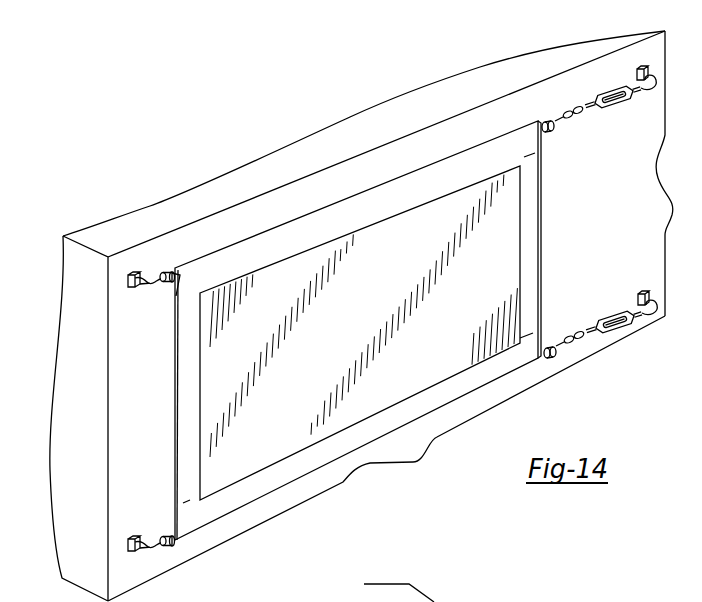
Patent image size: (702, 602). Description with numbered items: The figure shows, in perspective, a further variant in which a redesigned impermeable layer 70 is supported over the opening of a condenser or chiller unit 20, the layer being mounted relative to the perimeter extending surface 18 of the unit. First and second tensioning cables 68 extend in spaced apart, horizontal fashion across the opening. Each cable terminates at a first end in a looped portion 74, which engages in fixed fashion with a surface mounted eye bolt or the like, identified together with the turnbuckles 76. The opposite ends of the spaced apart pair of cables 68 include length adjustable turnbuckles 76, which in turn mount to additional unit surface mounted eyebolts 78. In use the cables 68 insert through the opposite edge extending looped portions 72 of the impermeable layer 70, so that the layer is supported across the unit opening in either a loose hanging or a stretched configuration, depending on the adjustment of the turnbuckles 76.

The perimeter extending surface 18 is at (298, 194).
The condenser or chiller unit 20 is at (78, 292).
The tensioning cables 68 is at (547, 120).
The impermeable layer 70 is at (388, 289).
The looped portions 72 is at (197, 268).
The looped portions 74 is at (162, 272).
The turnbuckles 76 is at (134, 287).
The eyebolts 78 is at (643, 68).